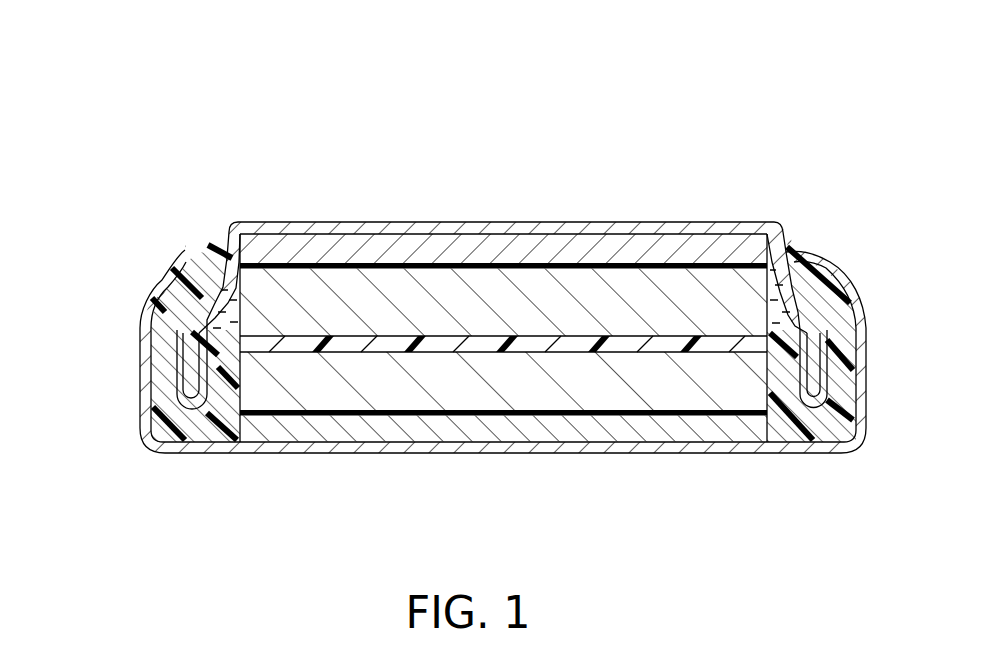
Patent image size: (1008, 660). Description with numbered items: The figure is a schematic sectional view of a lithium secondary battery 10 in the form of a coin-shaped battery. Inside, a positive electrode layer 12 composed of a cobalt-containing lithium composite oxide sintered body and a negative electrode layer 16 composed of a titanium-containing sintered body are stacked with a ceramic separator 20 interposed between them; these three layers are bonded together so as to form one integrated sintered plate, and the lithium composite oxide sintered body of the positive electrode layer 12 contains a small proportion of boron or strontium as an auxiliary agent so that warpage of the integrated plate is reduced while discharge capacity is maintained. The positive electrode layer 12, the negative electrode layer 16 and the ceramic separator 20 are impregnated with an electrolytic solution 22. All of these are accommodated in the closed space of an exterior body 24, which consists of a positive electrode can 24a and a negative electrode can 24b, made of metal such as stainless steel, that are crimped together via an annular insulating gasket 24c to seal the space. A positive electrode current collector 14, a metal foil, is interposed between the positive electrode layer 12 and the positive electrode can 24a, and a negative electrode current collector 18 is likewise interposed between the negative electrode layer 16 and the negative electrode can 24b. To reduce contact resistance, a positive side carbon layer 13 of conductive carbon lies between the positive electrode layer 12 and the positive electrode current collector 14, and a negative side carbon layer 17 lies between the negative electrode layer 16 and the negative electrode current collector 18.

The lithium secondary battery 10 is at (753, 88).
The positive electrode layer 12 is at (720, 390).
The positive side carbon layer 13 is at (668, 417).
The positive electrode current collector 14 is at (632, 438).
The negative electrode layer 16 is at (712, 290).
The negative side carbon layer 17 is at (680, 266).
The negative electrode current collector 18 is at (615, 245).
The ceramic separator 20 is at (753, 340).
The electrolytic solution 22 is at (773, 290).
The exterior body 24 is at (60, 243).
The positive electrode can 24a is at (148, 392).
The negative electrode can 24b is at (228, 272).
The gasket 24c is at (183, 312).